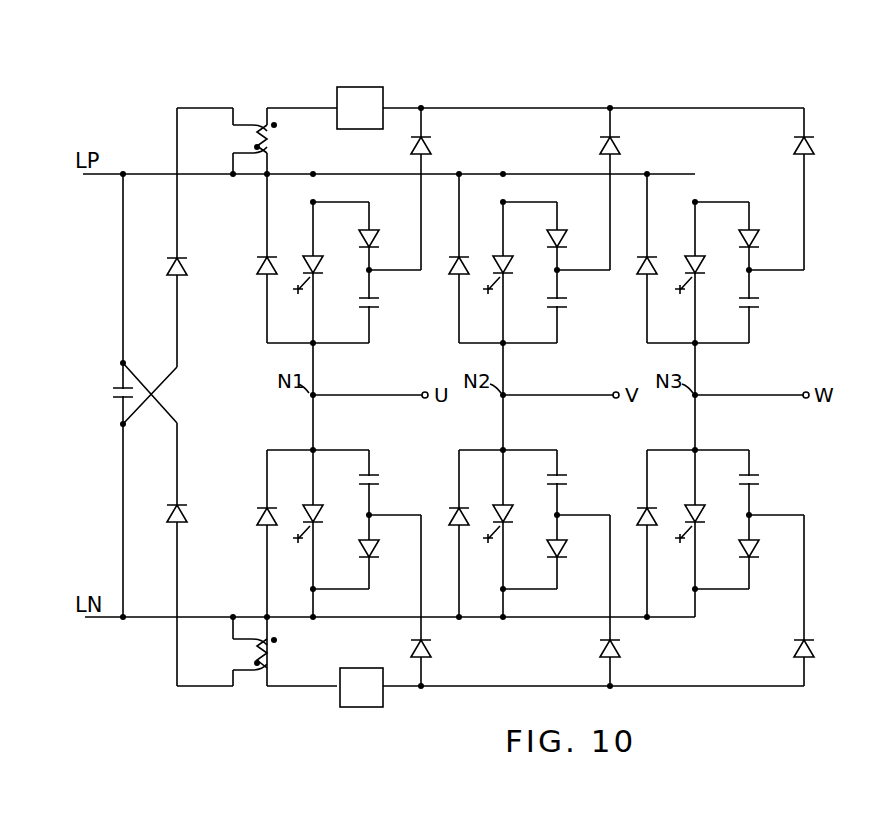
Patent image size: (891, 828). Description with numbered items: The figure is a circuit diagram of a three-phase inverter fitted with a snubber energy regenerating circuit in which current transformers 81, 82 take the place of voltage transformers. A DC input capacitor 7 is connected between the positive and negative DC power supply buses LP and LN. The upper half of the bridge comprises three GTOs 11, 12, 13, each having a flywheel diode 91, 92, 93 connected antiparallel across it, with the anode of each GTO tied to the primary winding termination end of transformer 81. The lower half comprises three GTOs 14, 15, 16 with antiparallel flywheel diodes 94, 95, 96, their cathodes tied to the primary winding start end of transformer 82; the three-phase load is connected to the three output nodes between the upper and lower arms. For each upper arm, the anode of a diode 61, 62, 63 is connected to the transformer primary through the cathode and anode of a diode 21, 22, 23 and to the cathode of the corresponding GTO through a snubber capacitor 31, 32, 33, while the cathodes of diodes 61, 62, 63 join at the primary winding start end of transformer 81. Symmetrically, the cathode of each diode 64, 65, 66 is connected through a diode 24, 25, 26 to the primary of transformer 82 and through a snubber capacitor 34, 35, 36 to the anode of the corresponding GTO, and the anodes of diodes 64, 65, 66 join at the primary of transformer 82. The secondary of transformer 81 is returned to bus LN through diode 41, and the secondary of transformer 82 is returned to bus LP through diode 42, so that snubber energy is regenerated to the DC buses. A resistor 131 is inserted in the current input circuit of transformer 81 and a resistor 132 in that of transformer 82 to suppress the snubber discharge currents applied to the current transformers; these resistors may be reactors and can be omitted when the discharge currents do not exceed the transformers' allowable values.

The DC input capacitor 7 is at (112, 392).
The GTO 11 is at (307, 250).
The GTO 12 is at (497, 250).
The GTO 13 is at (687, 250).
The GTO 14 is at (307, 505).
The GTO 15 is at (497, 505).
The GTO 16 is at (687, 505).
The diode 21 is at (383, 226).
The diode 22 is at (571, 226).
The diode 23 is at (764, 226).
The diode 24 is at (380, 548).
The diode 25 is at (568, 548).
The diode 26 is at (760, 548).
The snubber capacitor 31 is at (386, 300).
The snubber capacitor 32 is at (574, 300).
The snubber capacitor 33 is at (766, 300).
The snubber capacitor 34 is at (380, 487).
The snubber capacitor 35 is at (568, 487).
The snubber capacitor 36 is at (761, 487).
The diode 41 is at (170, 278).
The diode 42 is at (170, 525).
The diode 61 is at (433, 145).
The diode 62 is at (622, 145).
The diode 63 is at (816, 145).
The diode 64 is at (433, 651).
The diode 65 is at (622, 651).
The diode 66 is at (816, 651).
The current transformer 81 is at (278, 141).
The current transformer 82 is at (280, 655).
The flywheel diode 91 is at (260, 273).
The flywheel diode 92 is at (452, 265).
The flywheel diode 93 is at (640, 267).
The flywheel diode 94 is at (258, 524).
The flywheel diode 95 is at (452, 522).
The flywheel diode 96 is at (640, 522).
The resistor 131 is at (360, 84).
The resistor 132 is at (363, 709).